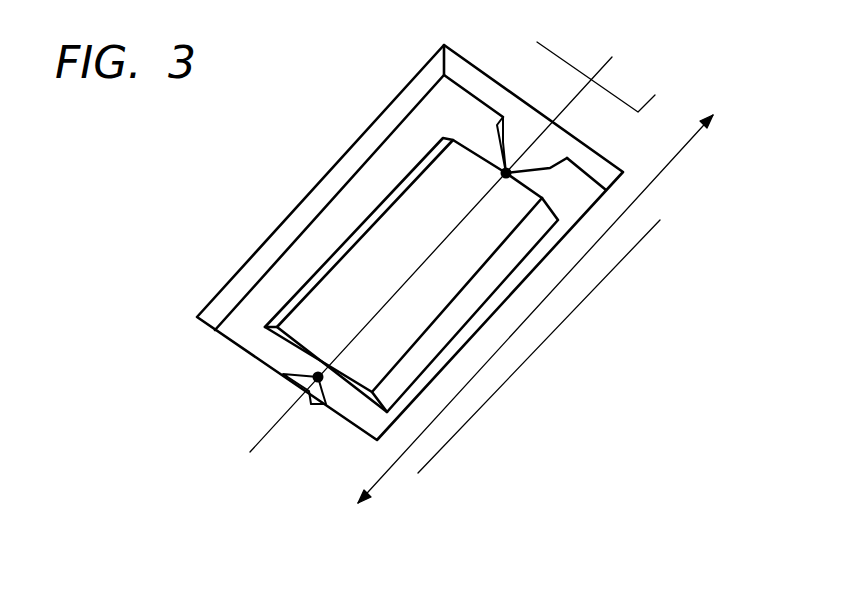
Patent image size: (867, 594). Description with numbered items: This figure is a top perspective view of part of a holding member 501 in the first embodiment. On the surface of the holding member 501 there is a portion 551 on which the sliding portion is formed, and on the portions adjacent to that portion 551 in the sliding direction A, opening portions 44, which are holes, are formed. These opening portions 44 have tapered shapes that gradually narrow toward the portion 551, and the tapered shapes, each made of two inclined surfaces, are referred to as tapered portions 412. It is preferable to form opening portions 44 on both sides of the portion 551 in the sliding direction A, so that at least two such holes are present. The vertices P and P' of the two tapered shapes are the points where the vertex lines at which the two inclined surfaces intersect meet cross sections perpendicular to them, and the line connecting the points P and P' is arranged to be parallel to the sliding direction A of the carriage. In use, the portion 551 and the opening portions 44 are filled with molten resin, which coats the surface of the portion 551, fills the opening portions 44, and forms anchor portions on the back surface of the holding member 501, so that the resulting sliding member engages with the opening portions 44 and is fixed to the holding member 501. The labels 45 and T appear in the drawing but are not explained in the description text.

The holding member 501 is at (668, 513).
The tapered portions 412 is at (542, 198).
The portion on which the sliding portion is formed 551 is at (408, 316).
The opening portions 44 is at (513, 137).
The notch 45 is at (577, 192).
The plate T is at (437, 247).
The vertex P is at (241, 315).
The vertex P' is at (431, 254).
The sliding direction A is at (683, 153).